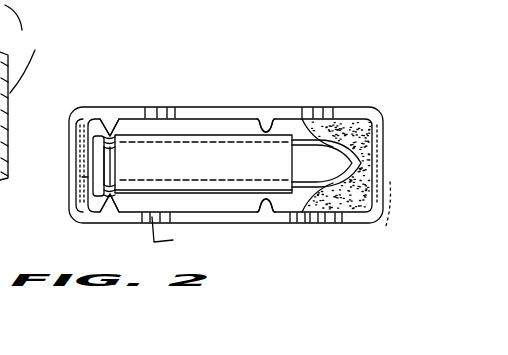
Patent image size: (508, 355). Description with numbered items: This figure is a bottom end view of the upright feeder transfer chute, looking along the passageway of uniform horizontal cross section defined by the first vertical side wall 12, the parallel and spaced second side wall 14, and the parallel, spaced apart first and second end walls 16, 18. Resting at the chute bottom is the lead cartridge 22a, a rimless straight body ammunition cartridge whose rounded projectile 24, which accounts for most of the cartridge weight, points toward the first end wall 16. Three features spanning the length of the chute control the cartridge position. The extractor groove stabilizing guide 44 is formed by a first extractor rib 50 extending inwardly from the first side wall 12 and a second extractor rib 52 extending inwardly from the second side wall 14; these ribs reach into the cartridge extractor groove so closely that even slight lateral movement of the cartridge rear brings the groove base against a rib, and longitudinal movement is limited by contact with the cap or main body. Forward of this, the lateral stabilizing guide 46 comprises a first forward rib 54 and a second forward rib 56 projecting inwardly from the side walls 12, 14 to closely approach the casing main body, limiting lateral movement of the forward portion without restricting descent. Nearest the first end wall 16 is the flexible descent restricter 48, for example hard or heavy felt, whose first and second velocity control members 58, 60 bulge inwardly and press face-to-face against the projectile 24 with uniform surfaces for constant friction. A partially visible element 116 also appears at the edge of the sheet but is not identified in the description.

The first vertical side wall 12 is at (218, 110).
The second side wall 14 is at (172, 236).
The first end wall 16 is at (386, 222).
The second end wall 18 is at (82, 177).
The lead cartridge 22a is at (167, 150).
The rounded projectile 24 is at (313, 160).
The extractor groove stabilizing guide 44 is at (143, 93).
The lateral stabilizing guide 46 is at (298, 88).
The descent restricter 48 is at (378, 97).
The first extractor rib 50 is at (111, 130).
The second extractor rib 52 is at (107, 212).
The first forward rib 54 is at (267, 122).
The second forward rib 56 is at (270, 212).
The first velocity control member 58 is at (335, 121).
The second velocity control member 60 is at (357, 204).
The adjacent figure element 116 is at (10, 36).